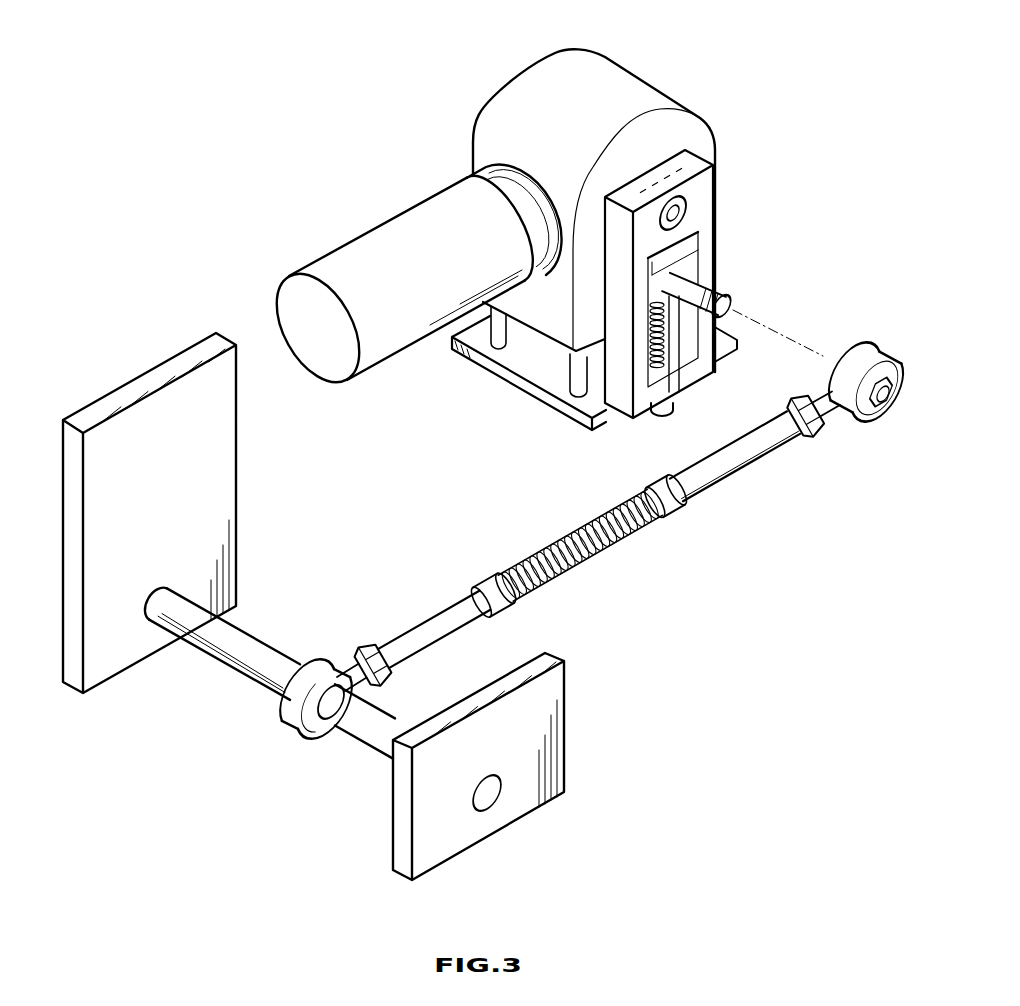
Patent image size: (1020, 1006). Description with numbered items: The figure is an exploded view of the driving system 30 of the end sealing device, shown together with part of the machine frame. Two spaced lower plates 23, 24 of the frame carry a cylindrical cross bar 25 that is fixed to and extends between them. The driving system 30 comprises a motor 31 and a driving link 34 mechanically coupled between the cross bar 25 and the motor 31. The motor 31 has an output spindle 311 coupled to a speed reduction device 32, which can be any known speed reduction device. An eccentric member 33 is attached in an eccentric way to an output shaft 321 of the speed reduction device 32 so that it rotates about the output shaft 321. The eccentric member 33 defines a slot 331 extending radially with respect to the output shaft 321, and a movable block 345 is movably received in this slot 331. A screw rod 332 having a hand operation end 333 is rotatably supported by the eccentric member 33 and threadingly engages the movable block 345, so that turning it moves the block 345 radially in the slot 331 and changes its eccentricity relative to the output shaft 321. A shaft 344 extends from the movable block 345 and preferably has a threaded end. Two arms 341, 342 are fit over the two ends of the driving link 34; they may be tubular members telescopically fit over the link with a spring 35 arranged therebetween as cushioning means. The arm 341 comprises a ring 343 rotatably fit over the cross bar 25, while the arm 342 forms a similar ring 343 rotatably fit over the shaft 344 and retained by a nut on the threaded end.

The lower plate 23 is at (202, 470).
The lower plate 24 is at (553, 718).
The cross bar 25 is at (245, 642).
The driving system 30 is at (299, 162).
The motor 31 is at (382, 235).
The motor flange 311 is at (507, 190).
The speed reduction device 32 is at (540, 100).
The output shaft 321 is at (688, 213).
The eccentric member 33 is at (693, 163).
The slot 331 is at (683, 360).
The screw rod 332 is at (727, 347).
The hand operation end 333 is at (673, 412).
The driving link 34 is at (580, 547).
The arm 341 is at (425, 630).
The arm 342 is at (715, 478).
The ring 343 is at (857, 352).
The shaft 344 is at (717, 300).
The movable block 345 is at (693, 261).
The spring 35 is at (598, 550).